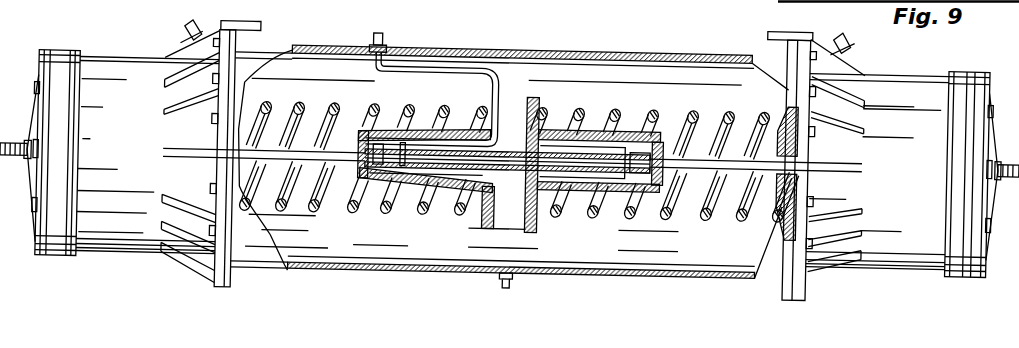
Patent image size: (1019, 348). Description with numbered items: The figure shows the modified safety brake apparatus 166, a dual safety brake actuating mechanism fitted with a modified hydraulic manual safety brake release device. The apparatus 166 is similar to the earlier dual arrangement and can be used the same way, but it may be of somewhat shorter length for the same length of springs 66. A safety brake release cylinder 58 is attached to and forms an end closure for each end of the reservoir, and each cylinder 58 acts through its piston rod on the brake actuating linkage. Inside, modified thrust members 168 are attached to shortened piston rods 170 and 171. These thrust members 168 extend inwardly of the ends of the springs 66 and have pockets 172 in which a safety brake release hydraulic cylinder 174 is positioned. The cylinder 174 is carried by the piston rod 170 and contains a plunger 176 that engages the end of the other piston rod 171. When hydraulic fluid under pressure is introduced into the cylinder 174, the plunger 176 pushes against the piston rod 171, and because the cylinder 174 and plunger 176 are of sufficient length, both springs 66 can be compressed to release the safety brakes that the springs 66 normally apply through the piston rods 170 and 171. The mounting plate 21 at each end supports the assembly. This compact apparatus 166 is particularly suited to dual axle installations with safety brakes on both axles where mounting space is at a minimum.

The safety brake release cylinder 58 is at (118, 78).
The mounting plate 21 is at (258, 33).
The springs 66 is at (368, 110).
The thrust members 168 is at (417, 133).
The plunger 176 is at (510, 156).
The safety brake release hydraulic cylinder 174 is at (509, 172).
The pockets 172 is at (442, 184).
The piston rod 170 is at (335, 200).
The piston rod 171 is at (671, 186).
The modified safety brake apparatus 166 is at (488, 274).